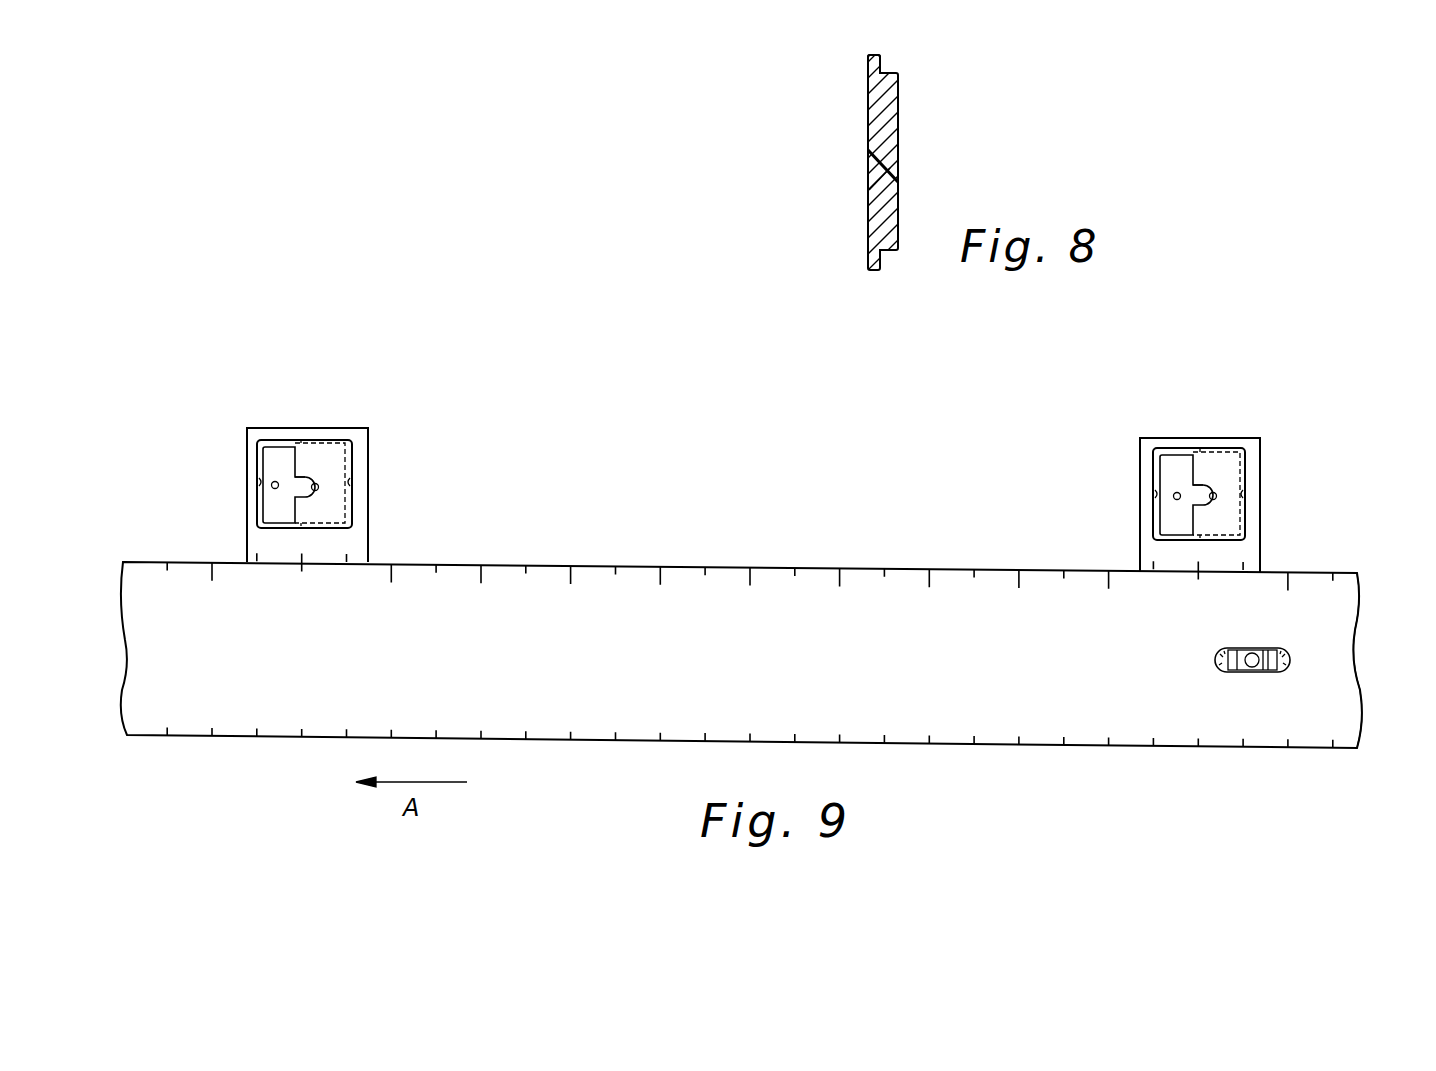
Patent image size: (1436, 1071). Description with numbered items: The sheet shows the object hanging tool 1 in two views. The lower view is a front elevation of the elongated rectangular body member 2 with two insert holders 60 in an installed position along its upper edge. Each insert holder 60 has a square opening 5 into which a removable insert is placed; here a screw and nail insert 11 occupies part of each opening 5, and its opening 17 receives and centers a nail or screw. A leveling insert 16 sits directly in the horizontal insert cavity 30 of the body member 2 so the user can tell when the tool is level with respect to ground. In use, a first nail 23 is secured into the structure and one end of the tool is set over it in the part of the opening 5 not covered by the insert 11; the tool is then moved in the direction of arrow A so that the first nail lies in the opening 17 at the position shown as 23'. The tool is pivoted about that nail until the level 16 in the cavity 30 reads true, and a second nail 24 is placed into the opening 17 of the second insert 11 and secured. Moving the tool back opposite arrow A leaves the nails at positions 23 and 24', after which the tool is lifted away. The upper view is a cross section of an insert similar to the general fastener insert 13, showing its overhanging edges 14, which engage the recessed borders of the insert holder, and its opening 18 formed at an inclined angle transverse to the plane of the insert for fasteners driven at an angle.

In FIG. 9, the object hanging tool 1 is at (678, 360).
In FIG. 9, the body member 2 is at (136, 667).
In FIG. 9, the opening 5 is at (277, 462).
In FIG. 9, the screw and nail insert 11 is at (328, 456).
In FIG. 8, the general fastener insert 13 is at (868, 122).
In FIG. 8, the overhanging edges 14 is at (879, 64).
In FIG. 9, the leveling insert 16 is at (1233, 670).
In FIG. 9, the opening 17 is at (296, 486).
In FIG. 8, the U-shaped opening 18 is at (868, 192).
In FIG. 9, the first nail 23 is at (224, 481).
In FIG. 9, the first nail position 23' is at (387, 455).
In FIG. 9, the second nail 24 is at (1261, 471).
In FIG. 9, the second nail position 24' is at (1125, 517).
In FIG. 9, the horizontal insert cavity 30 is at (1290, 660).
In FIG. 9, the insert holder 60 is at (355, 540).